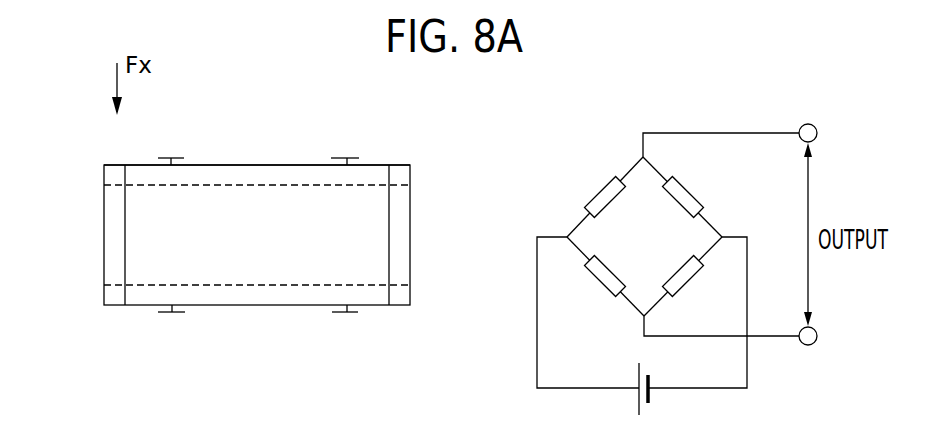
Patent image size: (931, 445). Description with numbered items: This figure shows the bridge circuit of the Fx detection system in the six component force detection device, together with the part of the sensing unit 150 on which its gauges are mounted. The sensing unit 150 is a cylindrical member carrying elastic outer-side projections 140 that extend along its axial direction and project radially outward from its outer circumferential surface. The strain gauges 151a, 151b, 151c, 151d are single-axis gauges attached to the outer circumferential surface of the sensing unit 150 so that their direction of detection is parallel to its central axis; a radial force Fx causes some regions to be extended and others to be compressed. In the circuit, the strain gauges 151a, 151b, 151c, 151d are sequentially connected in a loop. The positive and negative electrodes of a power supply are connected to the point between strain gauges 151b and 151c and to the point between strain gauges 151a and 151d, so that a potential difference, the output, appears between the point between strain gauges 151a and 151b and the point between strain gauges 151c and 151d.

The outer-side projection 140 is at (76, 127).
The sensing unit 150 is at (258, 163).
The strain gauge 151a is at (172, 157).
The strain gauge 151b is at (350, 157).
The strain gauge 151c is at (350, 313).
The strain gauge 151d is at (174, 313).